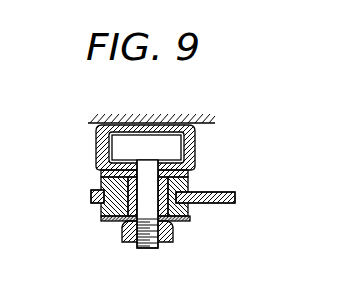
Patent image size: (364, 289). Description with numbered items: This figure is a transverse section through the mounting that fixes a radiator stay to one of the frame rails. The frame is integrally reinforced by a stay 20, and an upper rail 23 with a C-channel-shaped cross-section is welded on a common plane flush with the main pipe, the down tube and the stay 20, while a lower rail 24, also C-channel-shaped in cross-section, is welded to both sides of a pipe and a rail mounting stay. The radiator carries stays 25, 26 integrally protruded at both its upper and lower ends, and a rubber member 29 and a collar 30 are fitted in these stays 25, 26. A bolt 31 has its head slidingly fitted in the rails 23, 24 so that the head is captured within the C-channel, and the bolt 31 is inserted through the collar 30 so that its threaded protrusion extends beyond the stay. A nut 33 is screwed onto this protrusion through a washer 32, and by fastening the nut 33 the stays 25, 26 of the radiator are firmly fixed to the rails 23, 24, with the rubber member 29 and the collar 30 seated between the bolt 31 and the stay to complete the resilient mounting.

The stay 20 is at (107, 122).
The upper rail 23 is at (194, 147).
The lower rail 24 is at (196, 128).
The stay 25 is at (248, 200).
The stay 26 is at (237, 198).
The rubber member 29 is at (100, 211).
The collar 30 is at (100, 175).
The bolt 31 is at (184, 158).
The washer 32 is at (108, 221).
The nut 33 is at (175, 234).